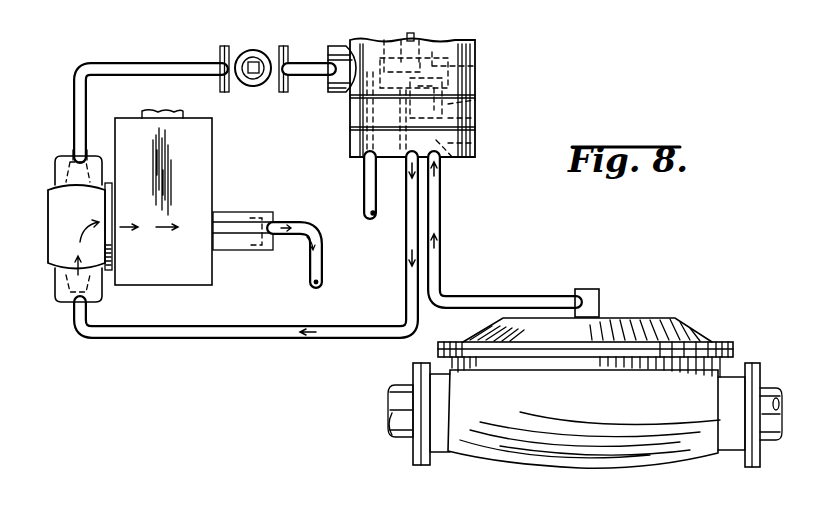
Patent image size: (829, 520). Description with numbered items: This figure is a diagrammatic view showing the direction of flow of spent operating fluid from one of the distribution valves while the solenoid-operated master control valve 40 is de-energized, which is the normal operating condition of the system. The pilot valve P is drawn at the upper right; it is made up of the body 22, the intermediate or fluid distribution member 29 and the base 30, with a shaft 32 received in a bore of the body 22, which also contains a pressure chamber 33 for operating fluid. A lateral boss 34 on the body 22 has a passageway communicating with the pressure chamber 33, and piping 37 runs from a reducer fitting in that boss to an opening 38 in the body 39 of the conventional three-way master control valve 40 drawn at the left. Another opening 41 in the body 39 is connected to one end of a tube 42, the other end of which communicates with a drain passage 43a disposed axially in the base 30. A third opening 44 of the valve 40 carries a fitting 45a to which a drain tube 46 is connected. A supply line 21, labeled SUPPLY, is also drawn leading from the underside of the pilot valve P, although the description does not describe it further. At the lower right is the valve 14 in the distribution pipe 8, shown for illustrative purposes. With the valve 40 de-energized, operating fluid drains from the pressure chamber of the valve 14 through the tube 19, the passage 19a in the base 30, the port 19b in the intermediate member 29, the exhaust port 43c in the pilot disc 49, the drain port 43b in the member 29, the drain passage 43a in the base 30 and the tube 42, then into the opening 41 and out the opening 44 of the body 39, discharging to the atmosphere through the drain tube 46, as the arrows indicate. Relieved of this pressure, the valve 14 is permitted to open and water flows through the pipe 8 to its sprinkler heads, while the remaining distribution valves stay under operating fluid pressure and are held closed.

The distribution pipe 8 is at (768, 385).
The valve 14 is at (646, 316).
The tube 19 is at (440, 233).
The passage 19a is at (452, 158).
The port 19b is at (478, 102).
The supply conduit 21 is at (366, 191).
The body 22 is at (478, 60).
The intermediate or fluid distribution member 29 is at (477, 119).
The base 30 is at (477, 144).
The shaft 32 is at (411, 33).
The pressure chamber 33 is at (466, 73).
The lateral boss 34 is at (336, 45).
The piping 37 is at (194, 60).
The opening 38 is at (70, 156).
The body 39 is at (56, 177).
The solenoid-operated master control valve 40 is at (47, 220).
The opening 41 is at (60, 289).
The tube 42 is at (407, 245).
The drain passage 43a is at (406, 148).
The drain port 43b is at (404, 106).
The exhaust port 43c is at (418, 50).
The third opening 44 is at (262, 212).
The fitting 45a is at (237, 212).
The drain tube 46 is at (310, 268).
The pilot disc 49 is at (385, 40).
The pilot valve P is at (487, 41).